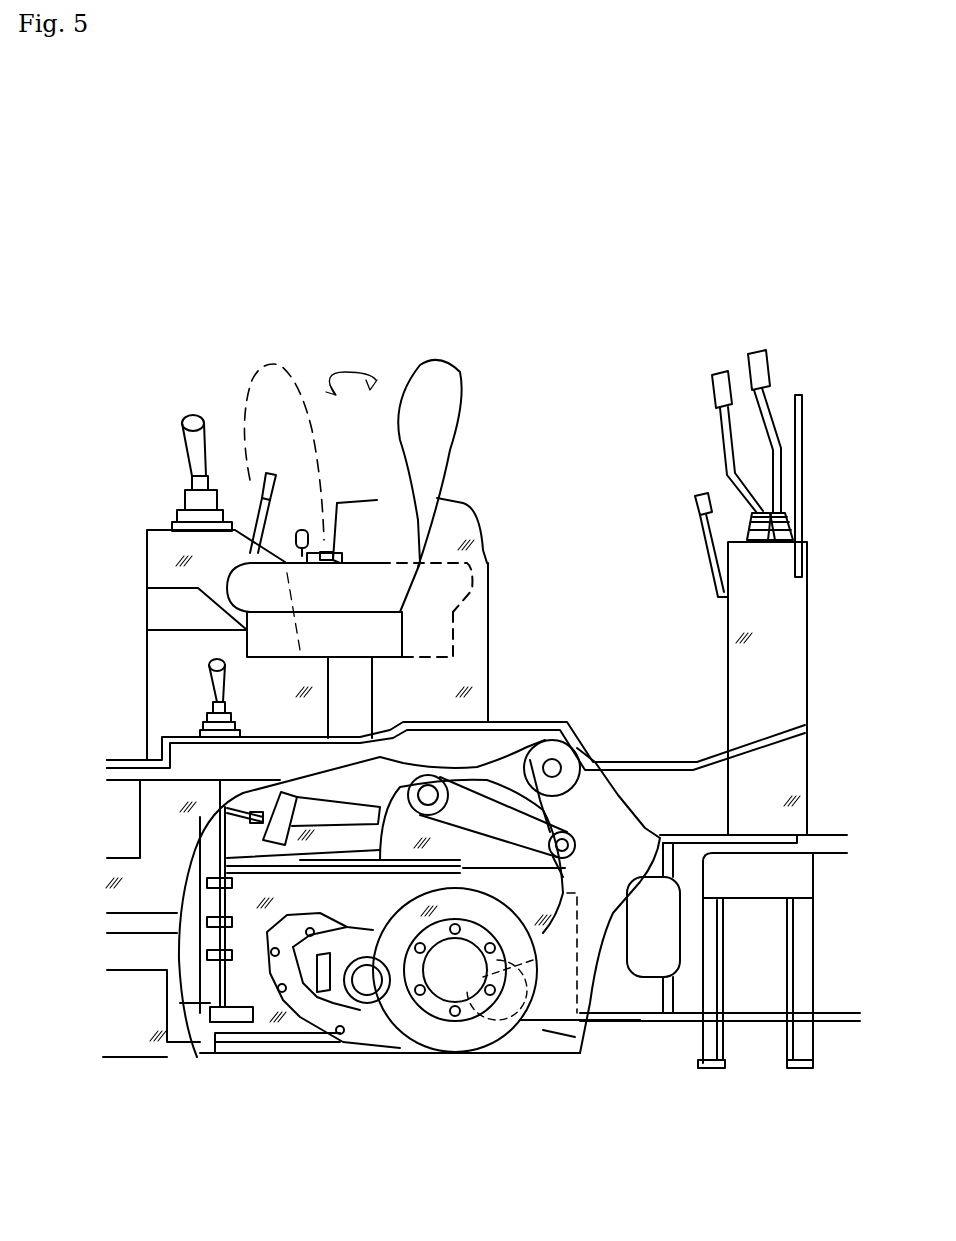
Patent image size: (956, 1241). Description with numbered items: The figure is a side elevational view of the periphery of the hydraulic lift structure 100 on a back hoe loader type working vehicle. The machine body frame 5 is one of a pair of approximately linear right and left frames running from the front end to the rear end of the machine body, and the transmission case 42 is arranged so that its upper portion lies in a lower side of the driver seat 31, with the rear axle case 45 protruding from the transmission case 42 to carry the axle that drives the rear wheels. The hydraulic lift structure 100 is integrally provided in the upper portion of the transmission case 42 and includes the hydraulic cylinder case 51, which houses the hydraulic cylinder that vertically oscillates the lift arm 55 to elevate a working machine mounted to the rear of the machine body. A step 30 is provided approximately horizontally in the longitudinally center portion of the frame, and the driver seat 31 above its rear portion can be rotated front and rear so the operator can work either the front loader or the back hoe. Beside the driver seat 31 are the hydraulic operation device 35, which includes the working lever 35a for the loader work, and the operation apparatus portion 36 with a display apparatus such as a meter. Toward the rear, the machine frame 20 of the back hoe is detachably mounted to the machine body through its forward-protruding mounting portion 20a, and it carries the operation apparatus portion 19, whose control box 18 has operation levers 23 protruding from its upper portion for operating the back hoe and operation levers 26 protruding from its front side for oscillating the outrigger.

The machine body frame 5 is at (517, 757).
The control box 18 is at (727, 667).
The operation apparatus portion 19 is at (725, 410).
The machine frame 20 is at (813, 833).
The mounting portion 20a is at (567, 753).
The operation levers 23 is at (715, 397).
The operation levers 26 is at (702, 537).
The step 30 is at (717, 756).
The driver seat 31 is at (463, 373).
The hydraulic operation device 35 is at (211, 403).
The working lever 35a is at (182, 421).
The operation apparatus portion 36 is at (487, 560).
The transmission case 42 is at (237, 1056).
The rear axle case 45 is at (365, 1025).
The hydraulic cylinder case 51 is at (565, 868).
The lift arm 55 is at (497, 800).
The hydraulic lift structure 100 is at (382, 776).